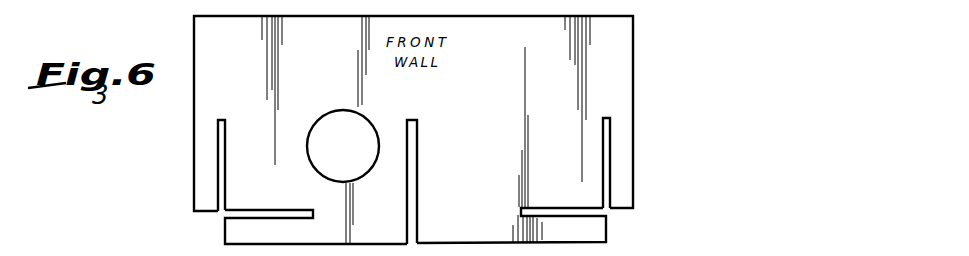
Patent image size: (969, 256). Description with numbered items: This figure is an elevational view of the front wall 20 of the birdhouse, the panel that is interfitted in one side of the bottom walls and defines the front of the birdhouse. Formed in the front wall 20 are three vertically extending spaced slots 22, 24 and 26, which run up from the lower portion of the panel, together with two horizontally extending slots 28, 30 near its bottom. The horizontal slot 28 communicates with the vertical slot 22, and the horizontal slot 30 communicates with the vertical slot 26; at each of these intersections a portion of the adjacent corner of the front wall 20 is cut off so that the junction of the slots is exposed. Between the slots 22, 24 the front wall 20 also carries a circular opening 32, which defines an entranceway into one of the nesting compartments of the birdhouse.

The front wall 20 is at (618, 65).
The vertically extending slot 22 is at (225, 158).
The vertically extending slot 24 is at (417, 155).
The vertically extending slot 26 is at (613, 173).
The horizontally extending slot 28 is at (245, 208).
The horizontally extending slot 30 is at (558, 207).
The circular opening 32 is at (333, 109).